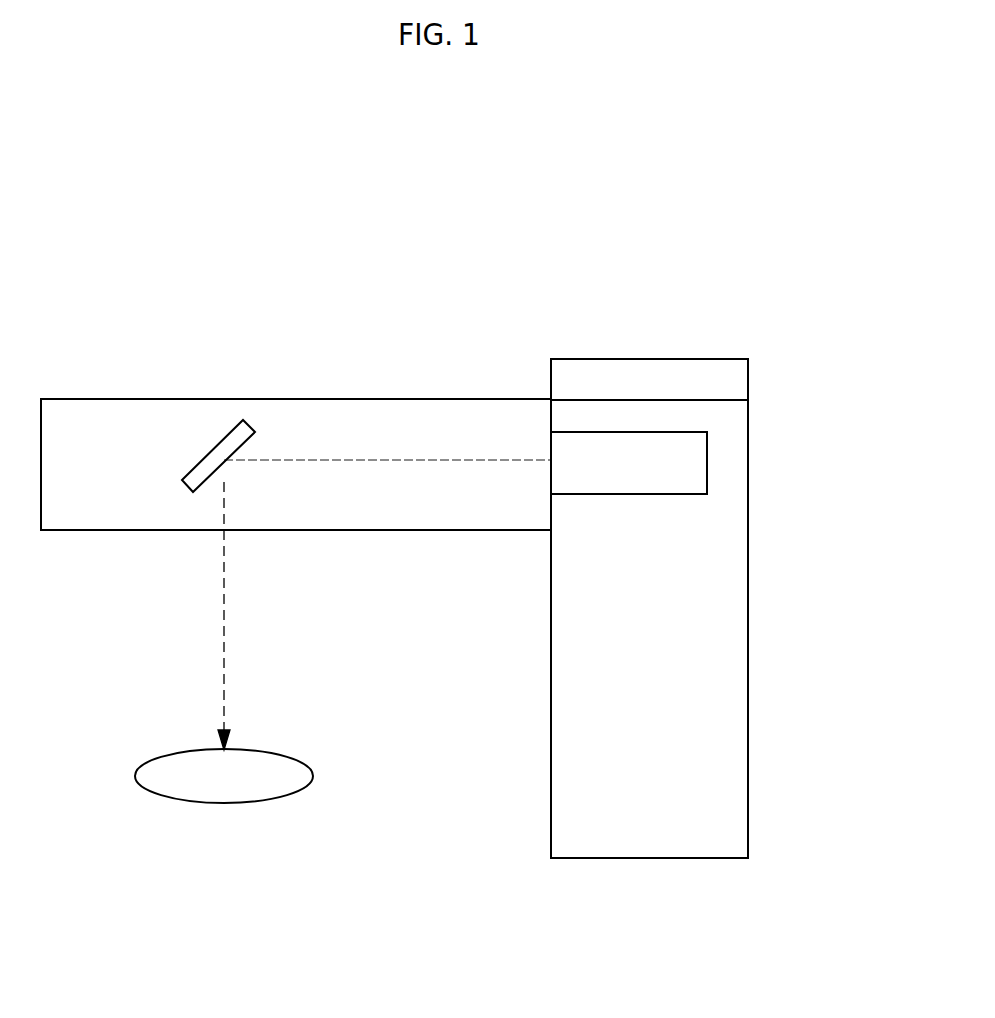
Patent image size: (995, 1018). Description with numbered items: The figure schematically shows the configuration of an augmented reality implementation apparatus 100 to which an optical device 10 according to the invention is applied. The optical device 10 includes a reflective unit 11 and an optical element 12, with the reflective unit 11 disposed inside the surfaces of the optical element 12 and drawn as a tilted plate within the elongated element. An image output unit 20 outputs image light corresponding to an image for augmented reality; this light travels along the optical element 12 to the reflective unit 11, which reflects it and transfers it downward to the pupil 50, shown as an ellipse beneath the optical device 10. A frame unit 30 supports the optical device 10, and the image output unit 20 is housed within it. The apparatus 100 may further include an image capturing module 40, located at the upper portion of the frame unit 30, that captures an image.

The augmented reality implementation apparatus 100 is at (607, 256).
The optical device 10 is at (497, 320).
The reflective unit 11 is at (245, 420).
The optical element 12 is at (427, 398).
The image output unit 20 is at (707, 463).
The frame unit 30 is at (749, 566).
The image capturing module 40 is at (673, 368).
The pupil 50 is at (298, 760).